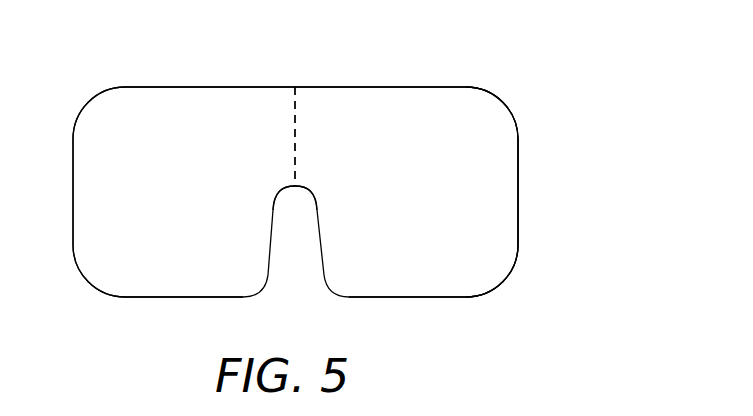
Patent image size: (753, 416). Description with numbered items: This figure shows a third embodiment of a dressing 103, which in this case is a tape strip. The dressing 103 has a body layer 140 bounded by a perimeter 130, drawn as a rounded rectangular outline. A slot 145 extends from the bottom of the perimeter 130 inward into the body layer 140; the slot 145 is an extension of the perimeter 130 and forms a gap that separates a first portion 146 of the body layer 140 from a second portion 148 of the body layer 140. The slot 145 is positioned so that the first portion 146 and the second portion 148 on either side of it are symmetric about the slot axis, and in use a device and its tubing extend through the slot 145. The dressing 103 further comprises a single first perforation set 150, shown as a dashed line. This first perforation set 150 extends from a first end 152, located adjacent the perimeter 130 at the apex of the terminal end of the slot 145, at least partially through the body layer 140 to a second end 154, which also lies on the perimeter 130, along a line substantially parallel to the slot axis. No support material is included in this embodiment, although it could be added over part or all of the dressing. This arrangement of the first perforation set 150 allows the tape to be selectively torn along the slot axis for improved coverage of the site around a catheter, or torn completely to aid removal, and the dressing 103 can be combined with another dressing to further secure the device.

The dressing 103 is at (366, 186).
The perimeter 130 is at (222, 87).
The body layer 140 is at (497, 207).
The slot 145 is at (292, 255).
The first portion 146 is at (184, 192).
The second portion 148 is at (406, 192).
The first perforation set 150 is at (295, 133).
The first end 152 is at (297, 184).
The second end 154 is at (295, 87).